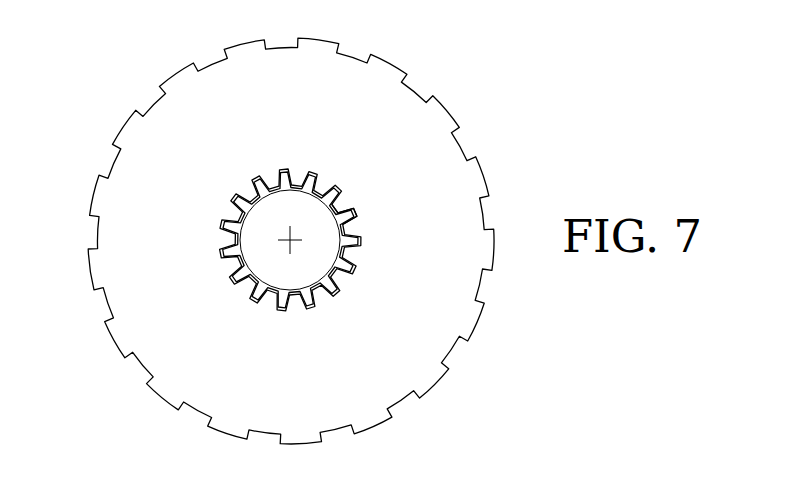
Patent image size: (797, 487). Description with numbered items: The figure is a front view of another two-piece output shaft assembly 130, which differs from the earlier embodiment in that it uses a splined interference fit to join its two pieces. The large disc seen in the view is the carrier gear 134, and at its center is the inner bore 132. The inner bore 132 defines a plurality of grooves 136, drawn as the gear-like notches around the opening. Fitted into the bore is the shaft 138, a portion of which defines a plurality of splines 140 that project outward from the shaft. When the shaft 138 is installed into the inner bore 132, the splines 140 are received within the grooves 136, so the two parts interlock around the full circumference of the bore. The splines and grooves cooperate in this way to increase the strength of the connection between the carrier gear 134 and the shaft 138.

The two-piece output shaft assembly 130 is at (130, 72).
The inner bore 132 is at (323, 190).
The carrier gear 134 is at (306, 116).
The grooves 136 is at (338, 191).
The shaft 138 is at (306, 220).
The splines 140 is at (347, 207).